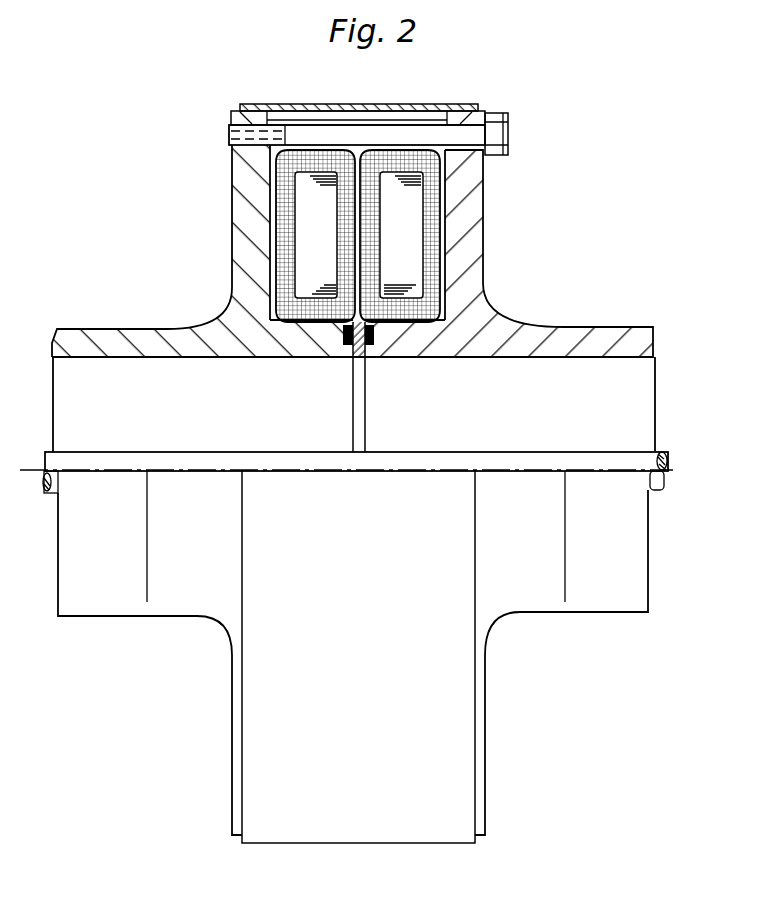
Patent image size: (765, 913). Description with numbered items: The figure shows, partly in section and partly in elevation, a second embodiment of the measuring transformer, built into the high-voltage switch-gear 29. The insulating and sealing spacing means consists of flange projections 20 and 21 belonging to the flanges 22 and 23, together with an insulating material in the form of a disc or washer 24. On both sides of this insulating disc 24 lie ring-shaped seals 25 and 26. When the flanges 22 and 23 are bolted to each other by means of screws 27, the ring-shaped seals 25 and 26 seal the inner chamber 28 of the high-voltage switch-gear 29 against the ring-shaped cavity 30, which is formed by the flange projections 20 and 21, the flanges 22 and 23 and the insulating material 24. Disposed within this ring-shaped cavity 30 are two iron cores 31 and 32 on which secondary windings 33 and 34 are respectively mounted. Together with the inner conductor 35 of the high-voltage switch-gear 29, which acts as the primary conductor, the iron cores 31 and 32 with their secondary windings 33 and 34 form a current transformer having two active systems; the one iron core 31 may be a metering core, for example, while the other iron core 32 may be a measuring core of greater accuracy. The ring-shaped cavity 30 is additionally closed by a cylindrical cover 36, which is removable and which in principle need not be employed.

The flange projection 20 is at (306, 343).
The flange projection 21 is at (418, 344).
The flange 22 is at (251, 178).
The flange 23 is at (462, 176).
The insulating disc or washer 24 is at (359, 375).
The ring-shaped seal 25 is at (342, 346).
The ring-shaped seal 26 is at (374, 346).
The screw 27 is at (325, 135).
The inner chamber 28 is at (625, 398).
The high-voltage switch-gear 29 is at (577, 368).
The ring-shaped cavity 30 is at (483, 288).
The iron core 31 is at (312, 235).
The iron core 32 is at (440, 218).
The secondary winding 33 is at (284, 270).
The secondary winding 34 is at (434, 268).
The inner conductor 35 is at (661, 489).
The cylindrical cover 36 is at (412, 108).